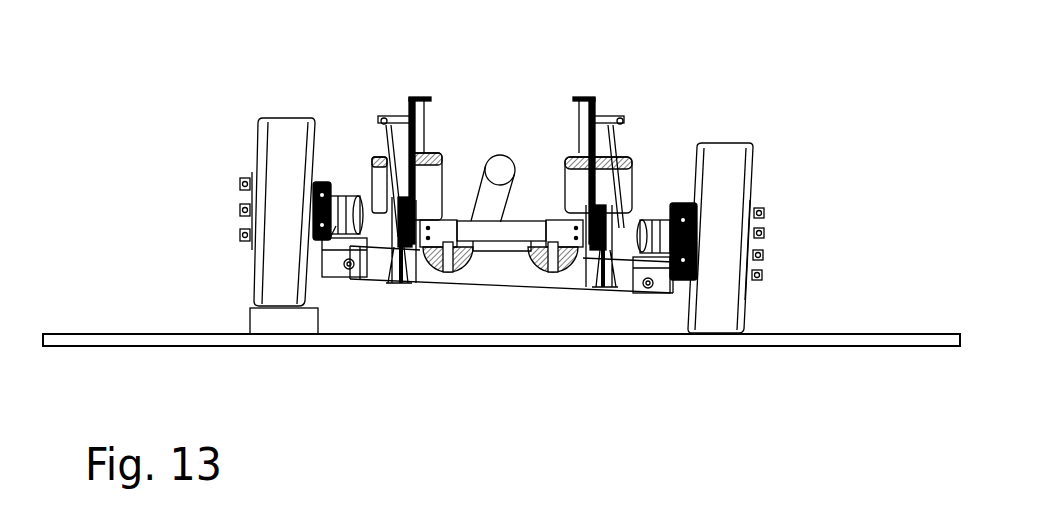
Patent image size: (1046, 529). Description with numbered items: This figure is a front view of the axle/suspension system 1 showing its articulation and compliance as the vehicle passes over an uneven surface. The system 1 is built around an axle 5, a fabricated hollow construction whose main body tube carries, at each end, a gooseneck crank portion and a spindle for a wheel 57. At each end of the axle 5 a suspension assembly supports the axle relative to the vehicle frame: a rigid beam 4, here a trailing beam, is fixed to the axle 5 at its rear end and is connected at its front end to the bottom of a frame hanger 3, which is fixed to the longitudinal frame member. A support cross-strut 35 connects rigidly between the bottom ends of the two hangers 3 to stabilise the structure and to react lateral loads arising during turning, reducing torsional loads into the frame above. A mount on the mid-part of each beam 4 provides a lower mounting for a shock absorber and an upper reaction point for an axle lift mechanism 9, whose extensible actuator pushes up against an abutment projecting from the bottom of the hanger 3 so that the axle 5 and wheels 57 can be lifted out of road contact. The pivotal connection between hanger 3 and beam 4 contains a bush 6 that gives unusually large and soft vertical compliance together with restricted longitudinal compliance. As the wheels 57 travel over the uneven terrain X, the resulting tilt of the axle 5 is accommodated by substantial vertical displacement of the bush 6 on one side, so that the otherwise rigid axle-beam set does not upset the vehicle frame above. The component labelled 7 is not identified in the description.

The axle/suspension system 1 is at (510, 222).
The frame hanger 3 is at (603, 170).
The rigid beam 4 is at (593, 283).
The axle 5 is at (492, 283).
The bush 6 is at (387, 247).
The air spring 7 is at (432, 177).
The axle lift mechanism 9 is at (550, 270).
The support cross-strut 35 is at (515, 236).
The wheel 57 is at (258, 148).
The uneven terrain X is at (277, 328).